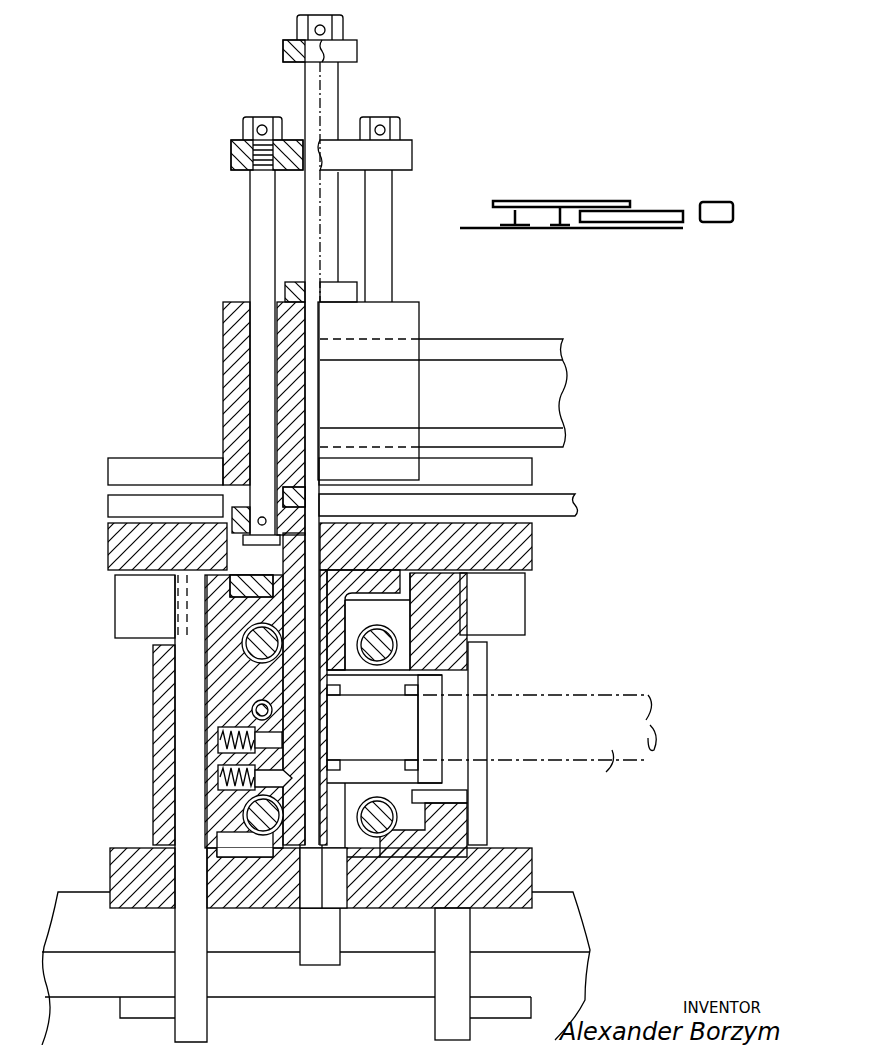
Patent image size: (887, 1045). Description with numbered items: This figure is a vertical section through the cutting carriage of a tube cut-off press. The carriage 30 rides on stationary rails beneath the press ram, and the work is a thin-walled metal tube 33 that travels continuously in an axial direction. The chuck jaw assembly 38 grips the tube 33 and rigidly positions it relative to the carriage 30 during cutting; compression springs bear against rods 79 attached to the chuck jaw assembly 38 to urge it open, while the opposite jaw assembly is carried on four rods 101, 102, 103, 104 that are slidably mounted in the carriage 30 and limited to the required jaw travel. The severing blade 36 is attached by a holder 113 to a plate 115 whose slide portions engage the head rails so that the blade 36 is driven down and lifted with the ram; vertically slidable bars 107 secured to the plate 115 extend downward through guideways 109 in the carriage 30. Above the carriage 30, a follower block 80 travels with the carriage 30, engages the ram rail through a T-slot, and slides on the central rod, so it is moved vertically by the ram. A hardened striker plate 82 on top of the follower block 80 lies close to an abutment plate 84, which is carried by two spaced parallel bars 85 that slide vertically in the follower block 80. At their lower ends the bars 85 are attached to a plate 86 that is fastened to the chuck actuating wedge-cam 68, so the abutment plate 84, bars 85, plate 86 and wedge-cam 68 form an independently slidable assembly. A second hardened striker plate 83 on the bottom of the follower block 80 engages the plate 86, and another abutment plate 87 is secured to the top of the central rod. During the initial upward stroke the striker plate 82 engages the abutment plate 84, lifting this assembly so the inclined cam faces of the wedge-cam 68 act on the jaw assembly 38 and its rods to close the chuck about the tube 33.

The carriage 30 is at (520, 863).
The thin-walled metal tube 33 is at (614, 772).
The severing blade 36 is at (333, 761).
The chuck jaw assembly 38 is at (380, 700).
The chuck actuating wedge-cam 68 is at (290, 610).
The rods 79 is at (255, 705).
The follower block 80 is at (223, 322).
The striker plate 82 is at (285, 292).
The striker plate 83 is at (296, 498).
The abutment plate 84 is at (410, 156).
The bars 85 is at (250, 213).
The plate 86 is at (232, 515).
The abutment plate 87 is at (283, 50).
The rod 101 is at (383, 646).
The rod 102 is at (244, 645).
The rod 103 is at (379, 820).
The rod 104 is at (266, 832).
The vertically slidable bars 107 is at (207, 1027).
The guideways 109 is at (167, 892).
The holder 113 is at (345, 602).
The plate 115 is at (520, 550).